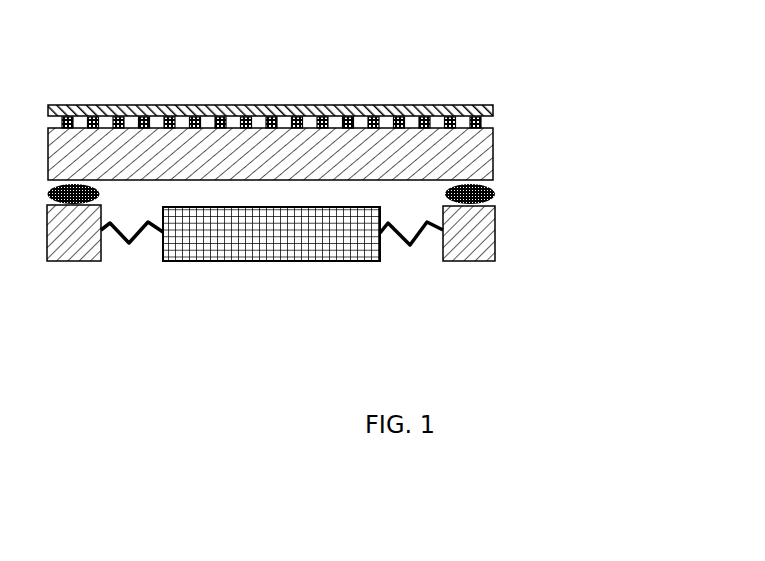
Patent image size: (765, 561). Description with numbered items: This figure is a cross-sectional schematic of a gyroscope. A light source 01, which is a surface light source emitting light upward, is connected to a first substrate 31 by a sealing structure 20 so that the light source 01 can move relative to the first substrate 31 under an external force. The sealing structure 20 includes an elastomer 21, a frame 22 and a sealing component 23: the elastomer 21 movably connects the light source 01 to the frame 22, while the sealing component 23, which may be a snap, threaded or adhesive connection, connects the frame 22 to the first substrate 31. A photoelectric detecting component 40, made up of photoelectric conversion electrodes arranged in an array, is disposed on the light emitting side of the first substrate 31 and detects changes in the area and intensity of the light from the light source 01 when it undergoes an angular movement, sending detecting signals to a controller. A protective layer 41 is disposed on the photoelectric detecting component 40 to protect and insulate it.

The light source 01 is at (272, 261).
The sealing structure 20 is at (386, 250).
The elastomer 21 is at (427, 222).
The frame 22 is at (495, 257).
The sealing component 23 is at (493, 196).
The first substrate 31 is at (493, 156).
The photoelectric detecting component 40 is at (493, 122).
The protective layer 41 is at (273, 105).